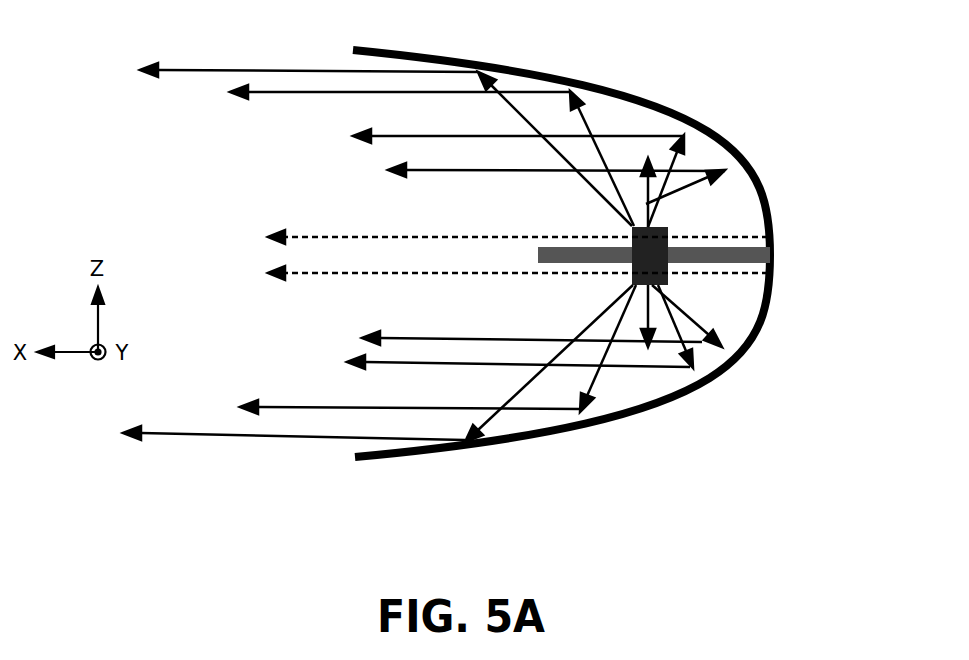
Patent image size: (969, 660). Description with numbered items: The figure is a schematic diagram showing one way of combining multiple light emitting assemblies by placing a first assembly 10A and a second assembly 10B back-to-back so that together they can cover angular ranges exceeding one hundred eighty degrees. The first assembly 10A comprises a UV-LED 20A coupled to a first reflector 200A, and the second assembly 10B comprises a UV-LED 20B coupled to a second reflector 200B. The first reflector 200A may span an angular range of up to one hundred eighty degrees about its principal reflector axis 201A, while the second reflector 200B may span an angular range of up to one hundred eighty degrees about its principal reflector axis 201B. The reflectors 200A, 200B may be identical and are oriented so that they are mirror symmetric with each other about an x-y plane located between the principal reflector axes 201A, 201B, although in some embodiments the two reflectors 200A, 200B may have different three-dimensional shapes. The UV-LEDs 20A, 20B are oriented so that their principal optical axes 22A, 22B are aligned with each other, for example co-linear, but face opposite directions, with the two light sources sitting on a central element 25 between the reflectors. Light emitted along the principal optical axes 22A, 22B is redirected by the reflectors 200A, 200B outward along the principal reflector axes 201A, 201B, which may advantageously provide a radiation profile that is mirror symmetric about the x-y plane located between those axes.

The first assembly 10A is at (789, 185).
The second assembly 10B is at (789, 318).
The UV-LED 20A is at (634, 224).
The UV-LED 20B is at (622, 280).
The principal optical axis 22A is at (645, 203).
The principal optical axis 22B is at (647, 288).
The substrate 25 is at (768, 255).
The first reflector 200A is at (557, 72).
The second reflector 200B is at (550, 436).
The principal reflector axis 201A is at (333, 237).
The principal reflector axis 201B is at (333, 273).